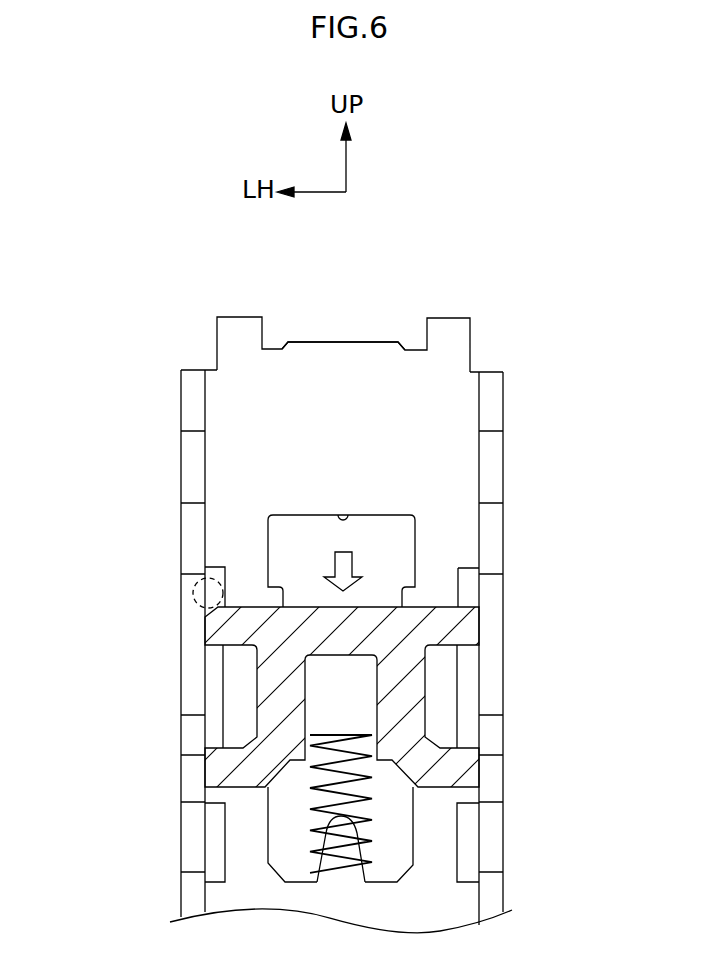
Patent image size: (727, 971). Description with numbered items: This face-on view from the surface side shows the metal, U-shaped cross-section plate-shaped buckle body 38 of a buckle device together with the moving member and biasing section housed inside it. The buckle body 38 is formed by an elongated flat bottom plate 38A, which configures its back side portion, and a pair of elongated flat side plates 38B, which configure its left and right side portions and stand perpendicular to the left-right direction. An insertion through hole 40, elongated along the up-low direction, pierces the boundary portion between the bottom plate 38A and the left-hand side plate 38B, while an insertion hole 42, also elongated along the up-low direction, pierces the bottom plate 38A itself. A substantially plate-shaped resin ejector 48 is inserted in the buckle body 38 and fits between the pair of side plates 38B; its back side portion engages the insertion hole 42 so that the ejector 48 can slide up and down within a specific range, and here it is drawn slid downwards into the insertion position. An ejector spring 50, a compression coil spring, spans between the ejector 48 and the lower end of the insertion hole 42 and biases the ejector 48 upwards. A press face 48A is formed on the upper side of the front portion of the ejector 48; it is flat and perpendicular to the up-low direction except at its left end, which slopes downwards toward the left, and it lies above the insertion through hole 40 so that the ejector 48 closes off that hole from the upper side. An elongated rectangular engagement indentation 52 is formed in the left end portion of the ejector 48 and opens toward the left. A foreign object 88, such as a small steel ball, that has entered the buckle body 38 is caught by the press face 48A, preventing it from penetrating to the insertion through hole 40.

The buckle body 38 is at (313, 342).
The bottom plate 38A is at (385, 362).
The side plates 38B is at (181, 395).
The insertion through hole 40 is at (208, 567).
The insertion hole 42 is at (343, 515).
The ejector 48 is at (250, 605).
The press face 48A is at (432, 605).
The ejector spring 50 is at (313, 808).
The engagement indentation 52 is at (217, 647).
The foreign object 88 is at (193, 590).